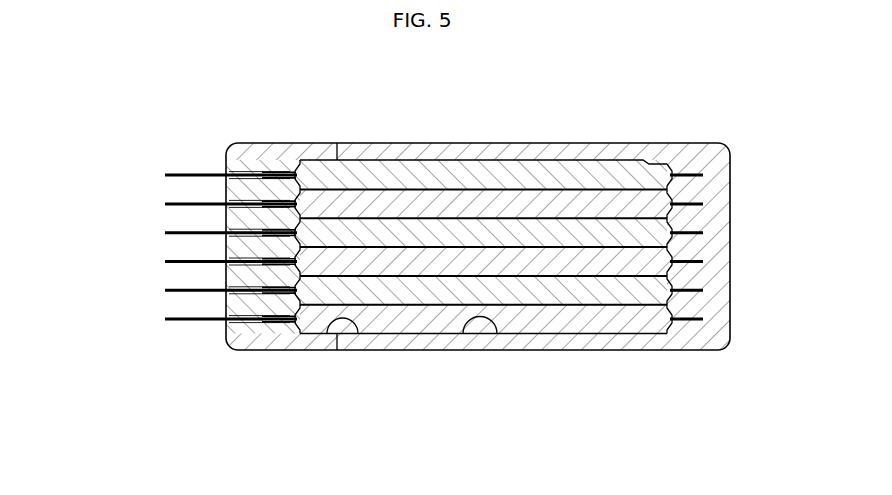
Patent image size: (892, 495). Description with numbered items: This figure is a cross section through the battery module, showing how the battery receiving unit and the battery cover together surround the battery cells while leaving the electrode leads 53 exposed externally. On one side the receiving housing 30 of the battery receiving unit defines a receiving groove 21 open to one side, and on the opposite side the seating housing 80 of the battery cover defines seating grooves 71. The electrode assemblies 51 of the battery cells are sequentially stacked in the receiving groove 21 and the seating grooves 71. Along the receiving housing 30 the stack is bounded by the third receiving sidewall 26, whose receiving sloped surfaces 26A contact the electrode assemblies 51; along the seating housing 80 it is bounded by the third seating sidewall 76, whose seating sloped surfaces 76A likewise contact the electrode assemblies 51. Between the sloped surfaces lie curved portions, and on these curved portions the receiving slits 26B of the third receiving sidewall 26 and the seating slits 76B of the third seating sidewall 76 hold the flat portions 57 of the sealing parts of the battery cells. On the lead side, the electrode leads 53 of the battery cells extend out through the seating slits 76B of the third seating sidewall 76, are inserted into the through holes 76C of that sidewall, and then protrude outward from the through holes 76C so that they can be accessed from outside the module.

The third receiving sidewall 26 is at (722, 182).
The receiving sloped surfaces 26A is at (664, 163).
The receiving slits 26B is at (696, 157).
The electrode assemblies 51 is at (473, 172).
The flat portions 57 is at (282, 170).
The electrode leads 53 is at (173, 318).
The third seating sidewall 76 is at (255, 148).
The seating sloped surfaces 76A is at (310, 178).
The seating slits 76B is at (285, 329).
The through holes 76C is at (237, 163).
The seating housing 80 is at (243, 341).
The seating grooves 71 is at (347, 348).
The receiving groove 21 is at (472, 334).
The receiving housing 30 is at (552, 342).